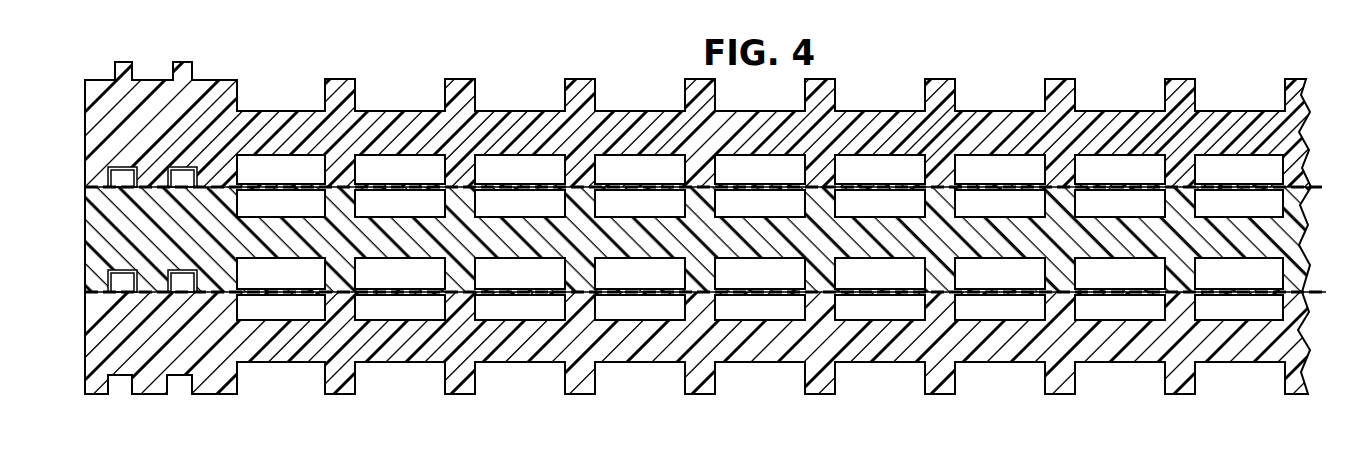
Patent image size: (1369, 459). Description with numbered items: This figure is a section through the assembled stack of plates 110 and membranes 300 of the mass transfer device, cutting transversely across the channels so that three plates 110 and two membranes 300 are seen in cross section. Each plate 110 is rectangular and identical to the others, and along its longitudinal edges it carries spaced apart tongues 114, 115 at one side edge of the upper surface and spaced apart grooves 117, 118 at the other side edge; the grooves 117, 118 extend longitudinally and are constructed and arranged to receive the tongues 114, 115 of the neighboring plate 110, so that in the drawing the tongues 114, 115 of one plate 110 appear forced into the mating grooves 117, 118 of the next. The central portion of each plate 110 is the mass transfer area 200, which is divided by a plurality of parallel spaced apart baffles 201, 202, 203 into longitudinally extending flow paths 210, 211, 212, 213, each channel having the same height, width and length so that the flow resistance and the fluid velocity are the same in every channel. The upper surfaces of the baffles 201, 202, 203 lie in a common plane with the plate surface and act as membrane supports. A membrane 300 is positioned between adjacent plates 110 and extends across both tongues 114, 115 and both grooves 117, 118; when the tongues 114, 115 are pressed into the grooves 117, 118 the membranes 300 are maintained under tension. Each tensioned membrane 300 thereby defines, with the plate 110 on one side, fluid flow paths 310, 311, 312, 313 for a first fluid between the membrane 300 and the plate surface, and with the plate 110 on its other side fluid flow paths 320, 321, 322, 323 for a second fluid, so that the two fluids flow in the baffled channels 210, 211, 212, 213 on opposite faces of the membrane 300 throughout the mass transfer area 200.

The mass transfer area 200 is at (688, 233).
The plate 110 is at (1306, 133).
The tongue 114 is at (117, 63).
The tongue 115 is at (177, 63).
The groove 117 is at (121, 393).
The groove 118 is at (177, 393).
The baffle 201 is at (345, 78).
The baffle 202 is at (457, 78).
The baffle 203 is at (579, 78).
The flow path 210 is at (264, 110).
The flow path 211 is at (386, 110).
The flow path 212 is at (503, 110).
The flow path 213 is at (624, 110).
The membrane 300 is at (1312, 186).
The fluid flow path 310 is at (760, 222).
The fluid flow path 311 is at (400, 169).
The fluid flow path 312 is at (520, 169).
The fluid flow path 313 is at (640, 169).
The fluid flow path 320 is at (760, 255).
The fluid flow path 321 is at (400, 203).
The fluid flow path 322 is at (520, 203).
The fluid flow path 323 is at (640, 203).